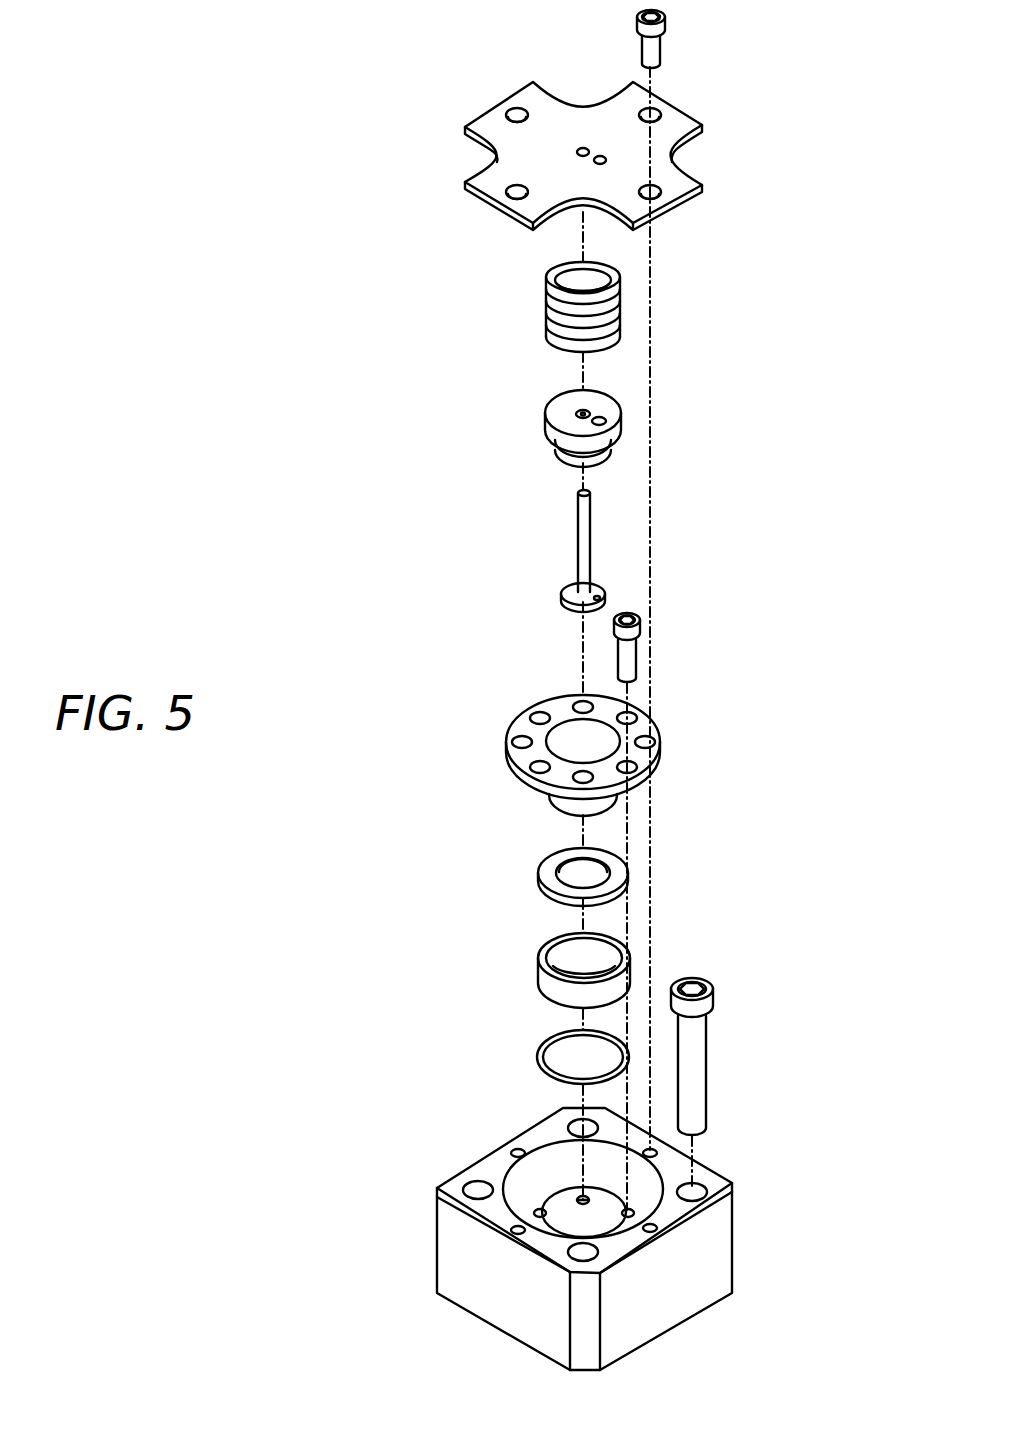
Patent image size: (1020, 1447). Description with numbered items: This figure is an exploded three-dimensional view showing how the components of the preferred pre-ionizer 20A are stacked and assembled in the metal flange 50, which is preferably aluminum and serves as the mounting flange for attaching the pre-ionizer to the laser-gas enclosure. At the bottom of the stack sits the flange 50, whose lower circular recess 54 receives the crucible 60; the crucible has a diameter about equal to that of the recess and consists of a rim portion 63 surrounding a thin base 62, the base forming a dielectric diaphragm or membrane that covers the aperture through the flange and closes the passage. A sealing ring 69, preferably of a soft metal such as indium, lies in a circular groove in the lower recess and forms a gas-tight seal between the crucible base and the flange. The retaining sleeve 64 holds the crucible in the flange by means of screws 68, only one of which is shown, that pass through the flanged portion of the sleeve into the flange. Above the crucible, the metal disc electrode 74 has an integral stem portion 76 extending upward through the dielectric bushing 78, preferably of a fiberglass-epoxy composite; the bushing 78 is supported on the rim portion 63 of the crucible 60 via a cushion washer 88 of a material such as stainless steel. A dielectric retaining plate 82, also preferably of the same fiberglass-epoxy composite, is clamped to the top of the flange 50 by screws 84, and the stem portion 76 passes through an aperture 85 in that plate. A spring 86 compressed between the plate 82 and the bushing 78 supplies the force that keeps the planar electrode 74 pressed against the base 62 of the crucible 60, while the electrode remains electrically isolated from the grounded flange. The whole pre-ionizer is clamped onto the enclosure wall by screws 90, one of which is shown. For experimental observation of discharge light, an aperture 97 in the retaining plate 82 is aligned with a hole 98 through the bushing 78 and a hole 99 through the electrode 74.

The pre-ionizer 20A is at (293, 578).
The flange 50 is at (524, 1239).
The lower circular recess 54 is at (567, 1222).
The crucible 60 is at (555, 947).
The base 62 is at (604, 965).
The rim portion 63 is at (557, 943).
The retaining sleeve 64 is at (663, 751).
The screws 68 is at (632, 657).
The sealing ring 69 is at (538, 1060).
The disc electrode 74 is at (577, 565).
The stem portion 76 is at (578, 523).
The bushing 78 is at (584, 414).
The retaining plate 82 is at (524, 150).
The screws 84 is at (652, 52).
The aperture 85 is at (577, 152).
The spring 86 is at (623, 315).
The cushion washer 88 is at (547, 872).
The screws 90 is at (703, 1038).
The aperture 97 is at (603, 155).
The hole 98 is at (604, 418).
The hole 99 is at (605, 592).